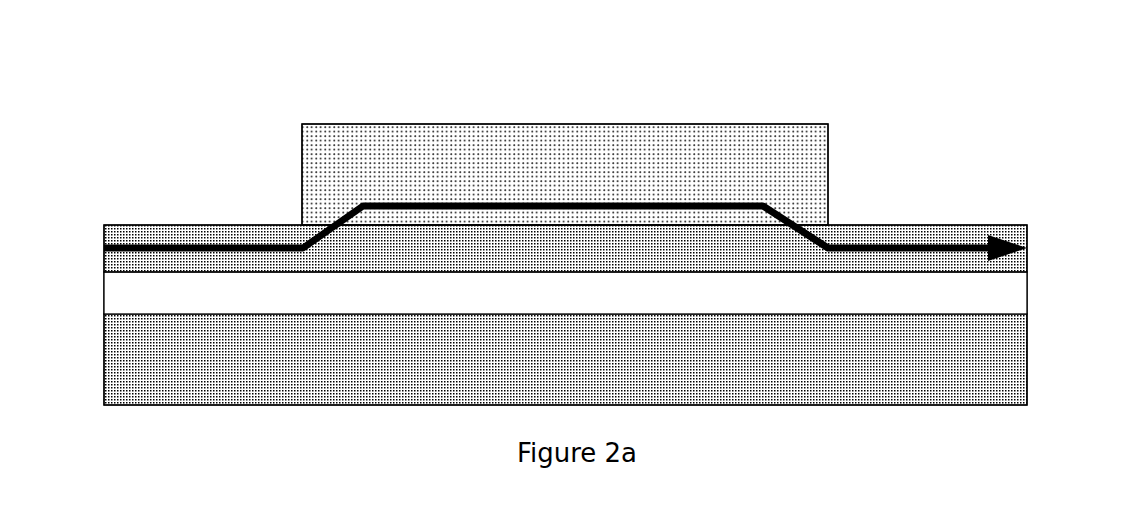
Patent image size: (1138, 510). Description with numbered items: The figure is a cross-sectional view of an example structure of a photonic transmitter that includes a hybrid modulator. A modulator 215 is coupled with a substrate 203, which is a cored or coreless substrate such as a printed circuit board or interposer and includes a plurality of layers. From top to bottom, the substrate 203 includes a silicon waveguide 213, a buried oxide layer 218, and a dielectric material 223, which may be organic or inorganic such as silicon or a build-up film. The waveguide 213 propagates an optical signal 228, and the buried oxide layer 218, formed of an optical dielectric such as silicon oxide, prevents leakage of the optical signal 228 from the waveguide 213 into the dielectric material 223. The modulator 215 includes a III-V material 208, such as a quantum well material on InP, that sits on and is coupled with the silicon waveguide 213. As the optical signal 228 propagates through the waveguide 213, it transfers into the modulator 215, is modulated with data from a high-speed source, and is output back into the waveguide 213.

The substrate 203 is at (94, 436).
The III-V material 208 is at (778, 158).
The silicon waveguide 213 is at (376, 247).
The modulator 215 is at (268, 92).
The buried oxide layer 218 is at (717, 292).
The dielectric material 223 is at (993, 362).
The optical signal 228 is at (140, 247).